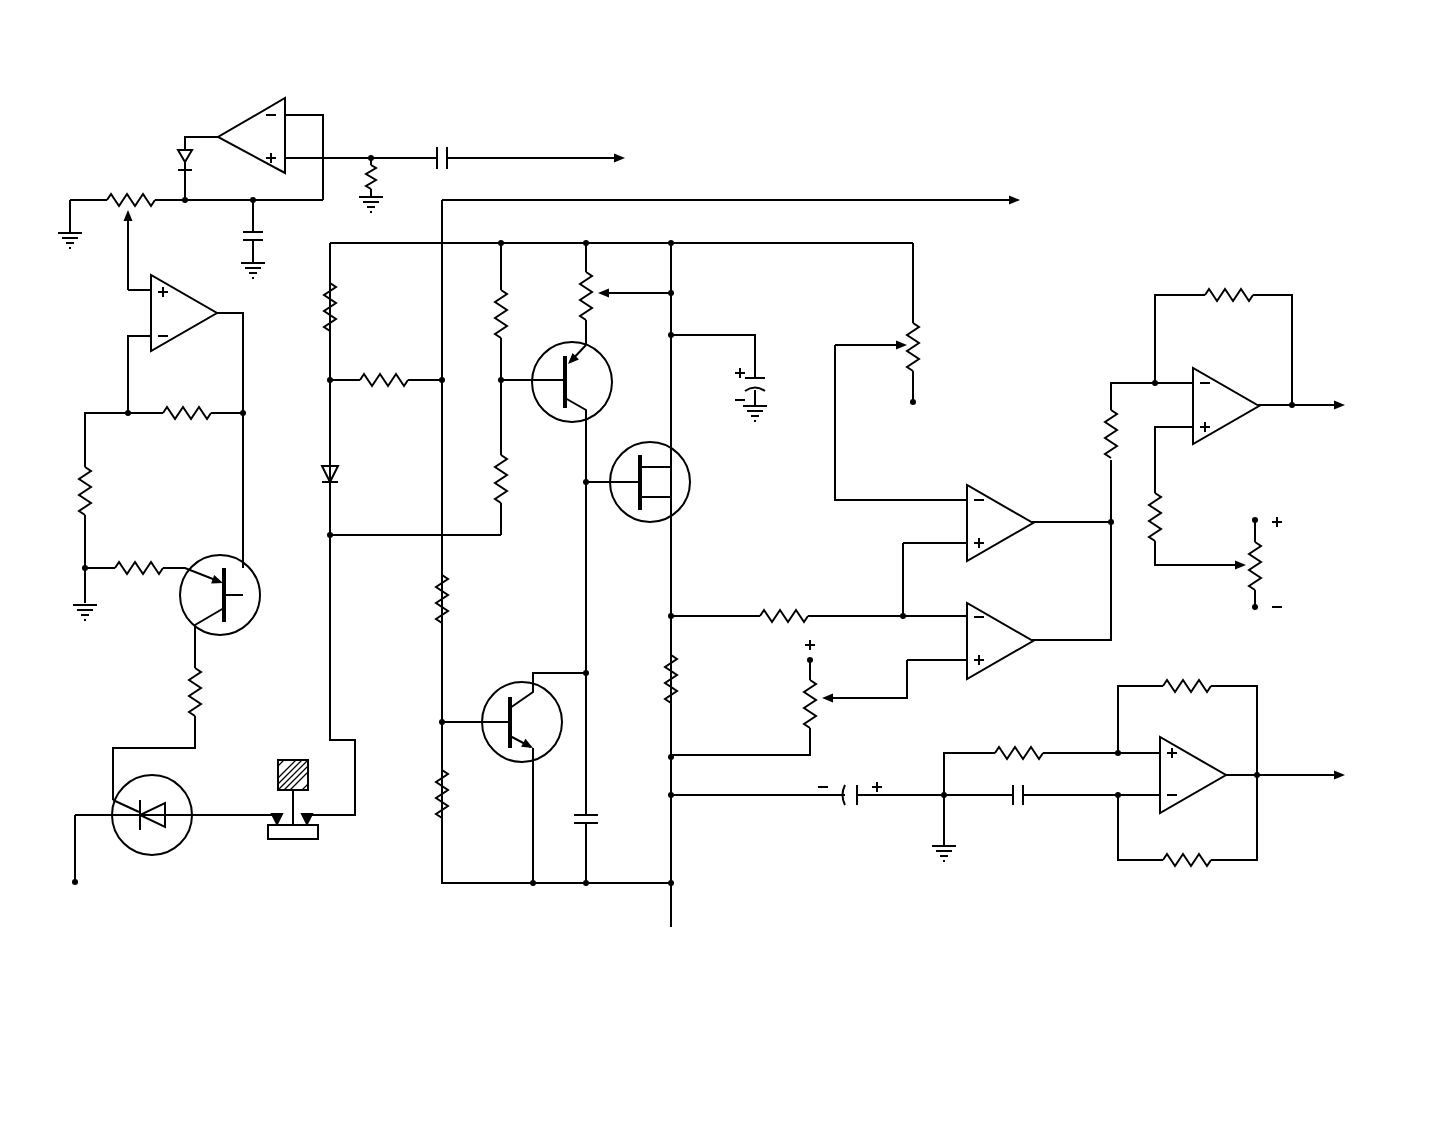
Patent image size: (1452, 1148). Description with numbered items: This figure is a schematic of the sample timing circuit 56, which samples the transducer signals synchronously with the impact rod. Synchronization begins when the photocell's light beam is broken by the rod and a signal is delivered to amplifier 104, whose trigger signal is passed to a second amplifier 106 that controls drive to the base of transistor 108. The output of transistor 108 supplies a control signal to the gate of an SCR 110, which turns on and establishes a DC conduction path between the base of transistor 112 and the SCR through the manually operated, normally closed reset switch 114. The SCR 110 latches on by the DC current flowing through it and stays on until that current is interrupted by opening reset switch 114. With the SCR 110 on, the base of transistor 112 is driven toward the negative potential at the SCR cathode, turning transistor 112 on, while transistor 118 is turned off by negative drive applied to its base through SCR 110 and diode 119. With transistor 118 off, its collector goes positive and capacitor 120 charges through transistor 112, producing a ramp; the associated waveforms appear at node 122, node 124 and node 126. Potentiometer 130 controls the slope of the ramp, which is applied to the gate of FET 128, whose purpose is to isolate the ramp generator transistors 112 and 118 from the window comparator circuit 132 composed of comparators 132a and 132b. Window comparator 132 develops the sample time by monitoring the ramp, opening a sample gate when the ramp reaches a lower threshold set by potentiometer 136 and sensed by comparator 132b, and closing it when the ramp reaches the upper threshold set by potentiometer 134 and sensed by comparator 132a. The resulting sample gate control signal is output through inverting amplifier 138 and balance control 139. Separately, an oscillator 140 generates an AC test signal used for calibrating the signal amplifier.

The sample timing circuit 56 is at (985, 148).
The amplifier 104 is at (260, 124).
The amplifier 106 is at (187, 320).
The transistor 108 is at (247, 612).
The SCR 110 is at (167, 840).
The transistor 112 is at (547, 400).
The reset switch 114 is at (288, 758).
The transistor 118 is at (497, 700).
The diode 119 is at (334, 470).
The capacitor 120 is at (603, 818).
The node 122 is at (243, 413).
The node 124 is at (330, 535).
The node 126 is at (586, 673).
The FET 128 is at (684, 487).
The potentiometer 130 is at (581, 302).
The window comparator circuit 132 is at (1000, 484).
The comparator 132a is at (1005, 530).
The comparator 132b is at (1000, 648).
The potentiometer 134 is at (923, 345).
The potentiometer 136 is at (820, 708).
The inverting amplifier 138 is at (1227, 413).
The balance control 139 is at (1267, 573).
The oscillator 140 is at (1038, 834).